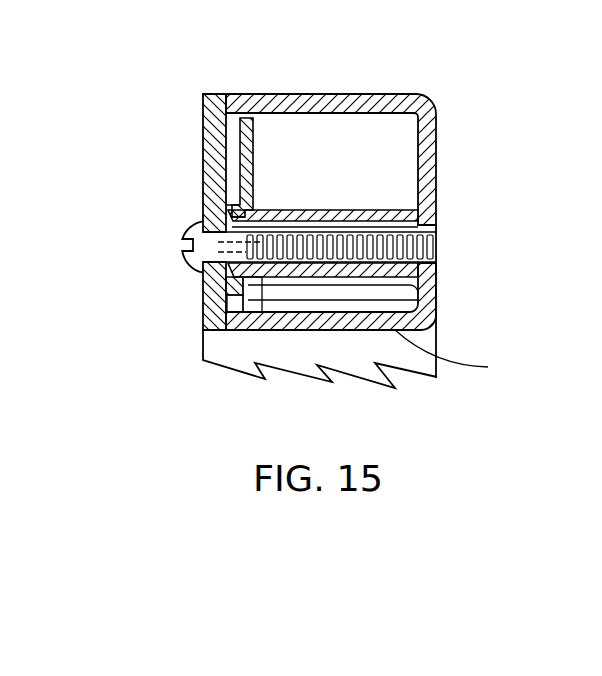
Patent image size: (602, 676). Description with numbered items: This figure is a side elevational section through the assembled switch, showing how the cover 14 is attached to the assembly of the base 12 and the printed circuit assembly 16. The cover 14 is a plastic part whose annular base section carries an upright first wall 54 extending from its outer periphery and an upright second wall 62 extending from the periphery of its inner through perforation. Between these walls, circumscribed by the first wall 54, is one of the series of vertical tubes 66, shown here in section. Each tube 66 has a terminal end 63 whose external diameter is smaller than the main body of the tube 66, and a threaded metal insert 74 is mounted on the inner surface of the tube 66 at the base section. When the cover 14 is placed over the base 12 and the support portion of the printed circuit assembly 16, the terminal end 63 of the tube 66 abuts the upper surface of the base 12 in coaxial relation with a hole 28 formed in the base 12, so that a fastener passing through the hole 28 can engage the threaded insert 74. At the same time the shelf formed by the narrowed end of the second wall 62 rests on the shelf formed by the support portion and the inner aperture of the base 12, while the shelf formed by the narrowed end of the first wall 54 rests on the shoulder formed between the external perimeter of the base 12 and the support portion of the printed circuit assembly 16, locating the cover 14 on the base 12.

The base 12 is at (203, 121).
The cover 14 is at (437, 122).
The printed circuit assembly 16 is at (255, 142).
The upright first wall 54 is at (395, 93).
The vertical tube 66 is at (380, 208).
The threaded metal insert 74 is at (437, 262).
The upright second wall 62 is at (373, 321).
The terminal end 63 is at (250, 208).
The hole 28 is at (233, 291).